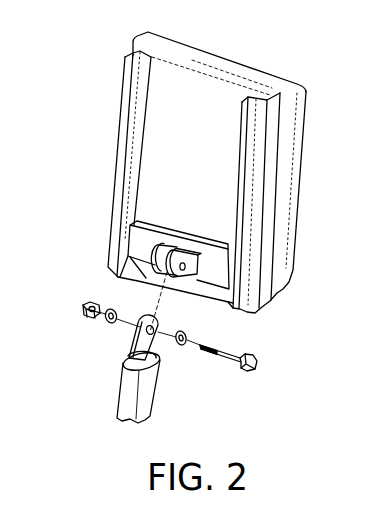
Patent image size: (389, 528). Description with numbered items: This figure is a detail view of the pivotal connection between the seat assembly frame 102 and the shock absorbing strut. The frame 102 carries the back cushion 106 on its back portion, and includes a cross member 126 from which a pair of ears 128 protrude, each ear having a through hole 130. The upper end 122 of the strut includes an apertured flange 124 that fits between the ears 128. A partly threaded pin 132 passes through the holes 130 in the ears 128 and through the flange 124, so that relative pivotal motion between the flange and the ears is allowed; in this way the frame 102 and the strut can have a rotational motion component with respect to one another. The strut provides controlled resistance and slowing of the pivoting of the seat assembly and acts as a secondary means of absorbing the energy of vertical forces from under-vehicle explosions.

The frame 102 is at (258, 120).
The back cushion 106 is at (232, 65).
The upper end 122 is at (123, 390).
The apertured flange 124 is at (145, 316).
The cross member 126 is at (148, 228).
The ears 128 is at (167, 250).
The through holes 130 is at (183, 272).
The partly threaded pin 132 is at (222, 360).